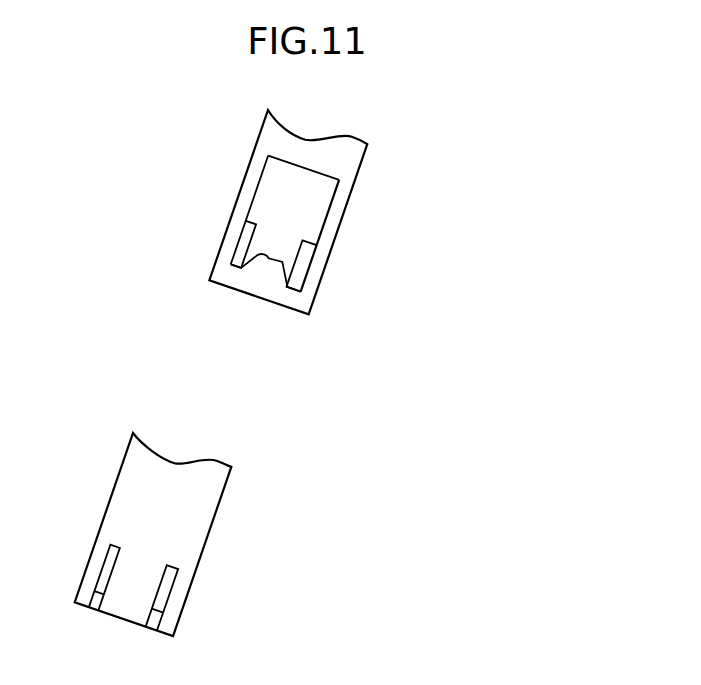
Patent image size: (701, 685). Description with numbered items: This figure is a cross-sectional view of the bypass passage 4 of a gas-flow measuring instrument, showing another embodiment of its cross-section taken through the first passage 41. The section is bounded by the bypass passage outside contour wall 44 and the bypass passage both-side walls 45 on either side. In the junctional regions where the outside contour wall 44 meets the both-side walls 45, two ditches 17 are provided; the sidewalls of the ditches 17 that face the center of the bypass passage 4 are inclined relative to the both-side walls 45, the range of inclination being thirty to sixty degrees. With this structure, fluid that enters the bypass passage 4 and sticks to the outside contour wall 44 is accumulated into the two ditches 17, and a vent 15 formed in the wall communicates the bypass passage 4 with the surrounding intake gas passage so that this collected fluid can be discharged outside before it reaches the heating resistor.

The bypass passage 4 is at (280, 168).
The first passage 41 is at (305, 193).
The bypass passage outside contour wall 44 is at (261, 258).
The bypass passage both-side walls 45 is at (252, 180).
The vent 15 is at (240, 250).
The ditches 17 is at (233, 278).